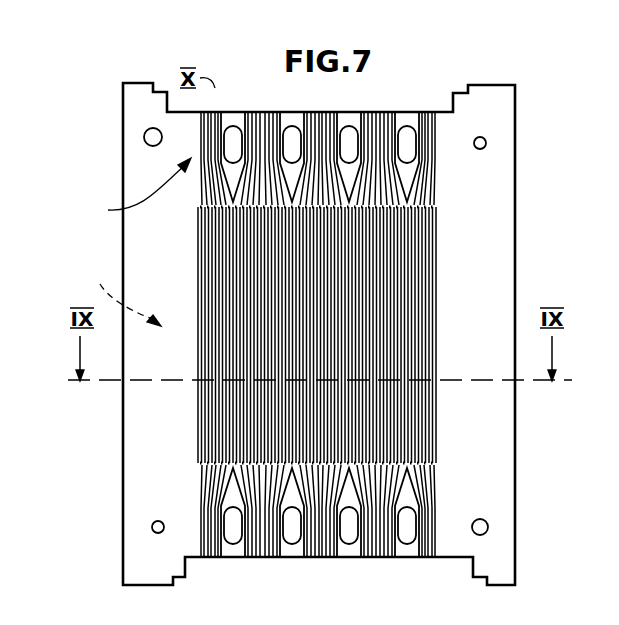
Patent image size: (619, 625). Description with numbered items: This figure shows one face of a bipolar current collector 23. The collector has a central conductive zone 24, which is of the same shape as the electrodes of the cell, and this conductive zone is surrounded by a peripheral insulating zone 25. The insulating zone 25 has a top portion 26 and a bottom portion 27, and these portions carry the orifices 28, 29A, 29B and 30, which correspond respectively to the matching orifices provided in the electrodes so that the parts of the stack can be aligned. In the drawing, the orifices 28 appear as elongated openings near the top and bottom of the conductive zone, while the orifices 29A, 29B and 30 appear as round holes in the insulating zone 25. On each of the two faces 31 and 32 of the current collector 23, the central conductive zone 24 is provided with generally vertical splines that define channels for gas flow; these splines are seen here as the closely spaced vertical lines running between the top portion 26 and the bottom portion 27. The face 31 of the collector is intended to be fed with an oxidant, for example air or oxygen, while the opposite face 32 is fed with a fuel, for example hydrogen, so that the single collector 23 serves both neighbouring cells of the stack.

The current collector 23 is at (515, 110).
The central conductive zone 24 is at (410, 267).
The peripheral insulating zone 25 is at (140, 431).
The top portion of the insulating zone 26 is at (446, 182).
The bottom portion of the insulating zone 27 is at (440, 503).
The orifice 28 is at (408, 126).
The orifice 29A is at (144, 138).
The orifice 29B is at (488, 527).
The orifice 30 is at (486, 143).
The face of the collector 31 is at (136, 190).
The face of the collector 32 is at (122, 292).